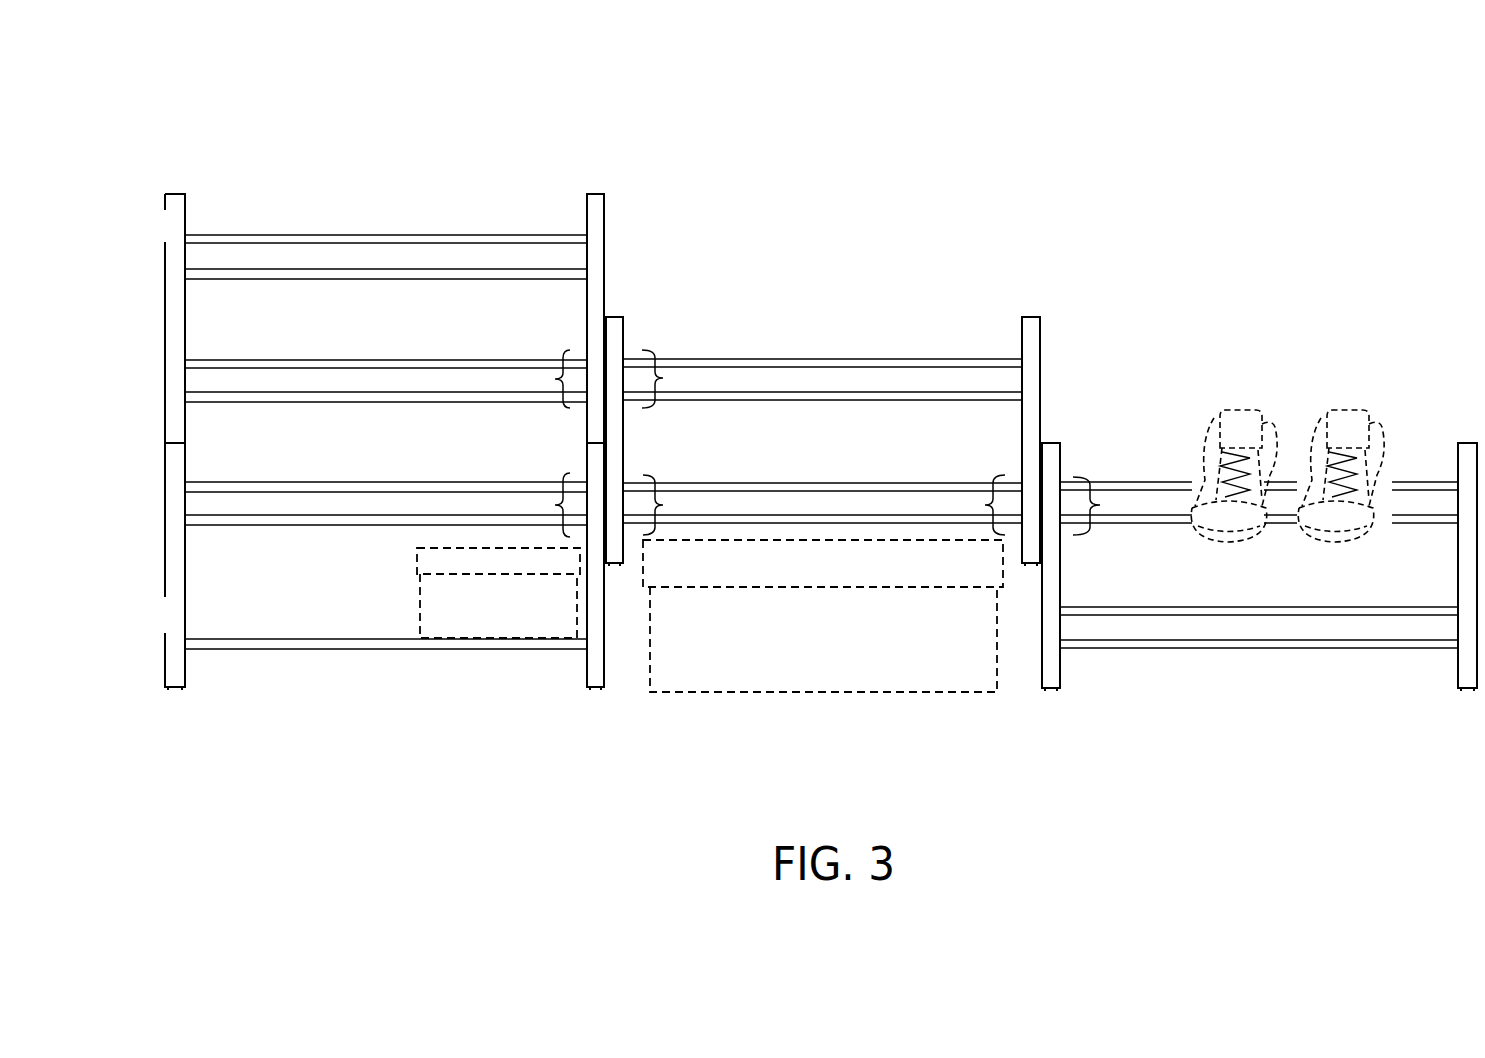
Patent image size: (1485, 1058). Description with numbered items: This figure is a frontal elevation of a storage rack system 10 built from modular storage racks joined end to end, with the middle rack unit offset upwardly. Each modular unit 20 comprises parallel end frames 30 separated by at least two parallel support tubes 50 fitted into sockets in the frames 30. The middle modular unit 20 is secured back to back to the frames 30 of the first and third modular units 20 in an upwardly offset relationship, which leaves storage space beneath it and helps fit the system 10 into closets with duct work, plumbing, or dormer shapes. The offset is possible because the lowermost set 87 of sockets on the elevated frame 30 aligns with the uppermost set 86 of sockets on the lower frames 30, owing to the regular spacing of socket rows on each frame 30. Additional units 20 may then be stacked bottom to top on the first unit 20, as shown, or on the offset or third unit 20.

The storage rack system 10 is at (1162, 230).
The modular unit 20 is at (438, 127).
The end frame 30 is at (625, 330).
The support tube 50 is at (868, 363).
The uppermost set of sockets 86 is at (555, 475).
The lowermost set of sockets 87 is at (553, 350).